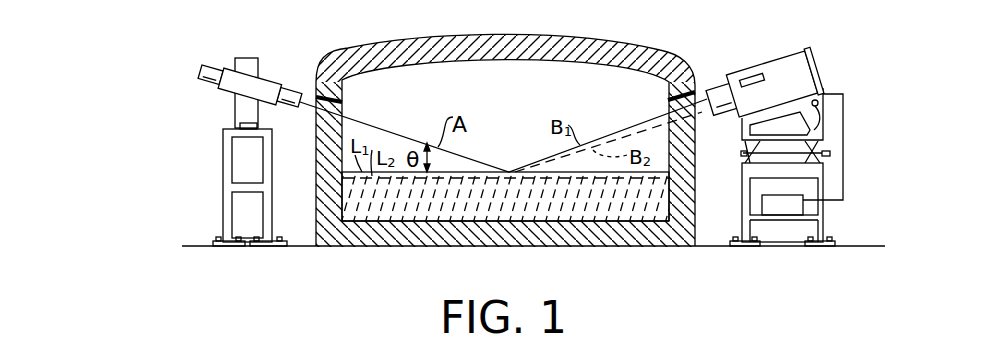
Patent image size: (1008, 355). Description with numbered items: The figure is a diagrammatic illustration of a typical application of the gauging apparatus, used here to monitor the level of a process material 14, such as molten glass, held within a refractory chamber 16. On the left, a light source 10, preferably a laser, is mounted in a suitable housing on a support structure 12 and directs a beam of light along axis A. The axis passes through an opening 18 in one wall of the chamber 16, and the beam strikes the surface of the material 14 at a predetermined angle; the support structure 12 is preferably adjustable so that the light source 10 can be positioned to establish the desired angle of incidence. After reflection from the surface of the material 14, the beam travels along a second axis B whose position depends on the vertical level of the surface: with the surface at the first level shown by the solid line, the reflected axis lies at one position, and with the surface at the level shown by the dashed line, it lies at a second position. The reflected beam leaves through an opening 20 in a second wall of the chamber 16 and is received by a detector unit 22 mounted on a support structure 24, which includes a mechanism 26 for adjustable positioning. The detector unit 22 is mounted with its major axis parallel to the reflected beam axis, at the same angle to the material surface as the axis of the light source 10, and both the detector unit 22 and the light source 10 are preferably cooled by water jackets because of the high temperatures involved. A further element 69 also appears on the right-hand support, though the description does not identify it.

The light source 10 is at (266, 84).
The support structure 12 is at (223, 163).
The process material 14 is at (444, 214).
The refractory chamber 16 is at (316, 212).
The opening 18 is at (368, 82).
The opening 20 is at (668, 110).
The detector unit 22 is at (778, 70).
The support structure 24 is at (827, 192).
The mechanism for adjustable positioning 26 is at (827, 127).
The control unit 69 is at (798, 212).